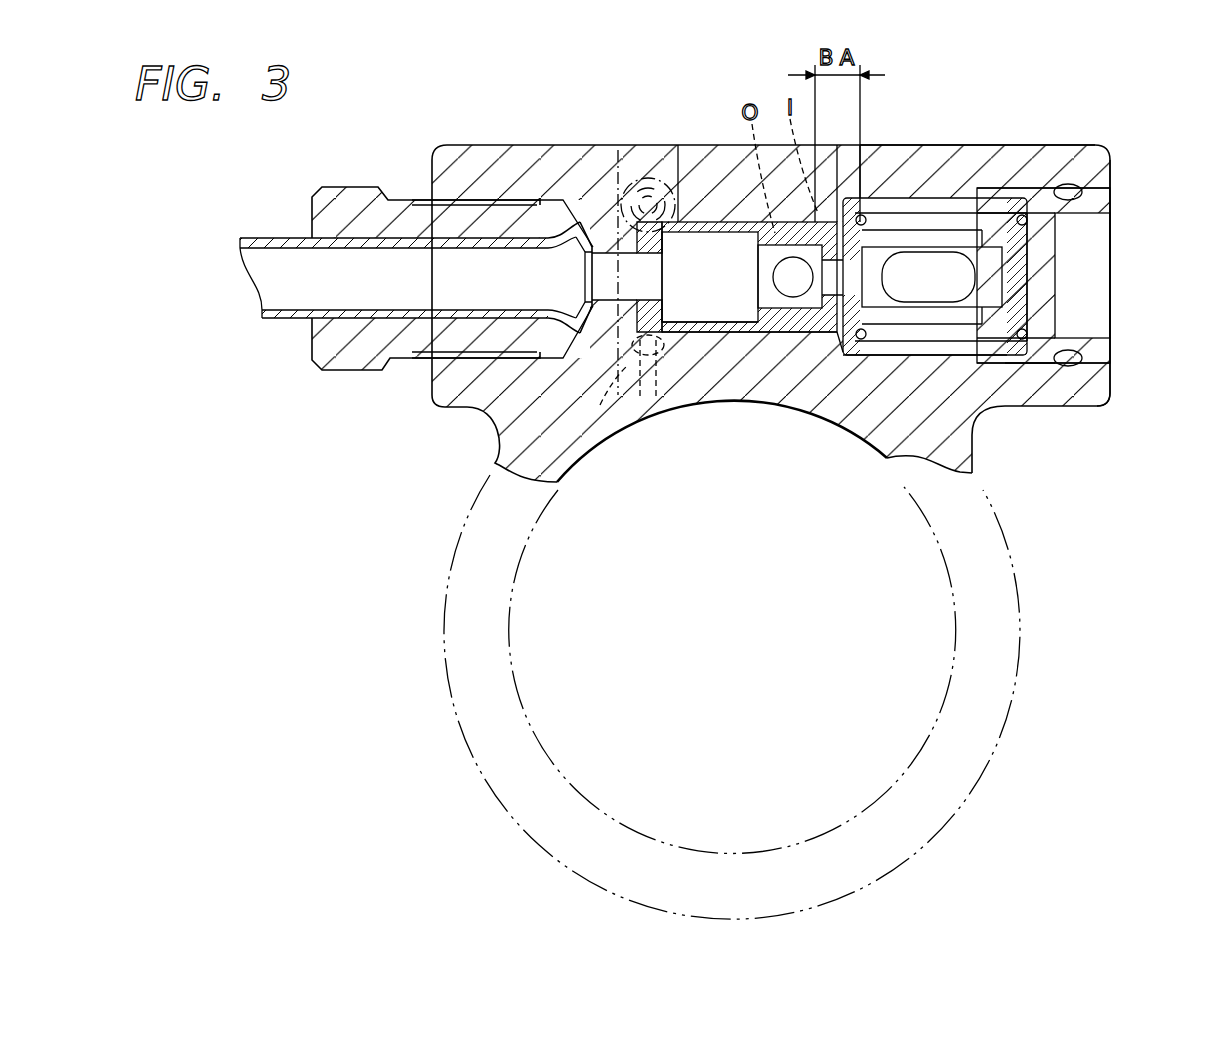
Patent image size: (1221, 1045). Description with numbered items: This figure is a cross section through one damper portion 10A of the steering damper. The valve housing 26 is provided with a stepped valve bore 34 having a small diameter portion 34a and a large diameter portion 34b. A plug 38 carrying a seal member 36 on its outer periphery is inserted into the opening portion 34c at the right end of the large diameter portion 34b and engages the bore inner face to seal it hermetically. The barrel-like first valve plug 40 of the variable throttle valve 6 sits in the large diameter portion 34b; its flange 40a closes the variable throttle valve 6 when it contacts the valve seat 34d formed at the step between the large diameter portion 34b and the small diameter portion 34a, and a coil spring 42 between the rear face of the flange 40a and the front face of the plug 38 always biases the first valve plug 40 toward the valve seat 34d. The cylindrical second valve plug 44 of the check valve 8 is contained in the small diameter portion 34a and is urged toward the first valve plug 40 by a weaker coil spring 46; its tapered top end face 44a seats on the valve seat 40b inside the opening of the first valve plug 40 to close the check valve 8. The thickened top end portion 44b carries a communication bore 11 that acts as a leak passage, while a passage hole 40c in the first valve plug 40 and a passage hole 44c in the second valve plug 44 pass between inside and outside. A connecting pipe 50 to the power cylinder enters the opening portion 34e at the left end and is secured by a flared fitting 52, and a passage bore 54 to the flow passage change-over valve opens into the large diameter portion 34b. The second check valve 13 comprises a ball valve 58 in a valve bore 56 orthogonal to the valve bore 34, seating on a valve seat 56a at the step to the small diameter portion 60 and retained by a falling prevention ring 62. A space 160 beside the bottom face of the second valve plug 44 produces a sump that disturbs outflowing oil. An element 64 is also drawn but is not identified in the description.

The variable throttle valve 6 is at (850, 356).
The check valve 8 is at (838, 338).
The damper portion 10A is at (845, 162).
The communication bore 11 is at (760, 266).
The second check valve 13 is at (622, 428).
The valve housing 26 is at (1008, 553).
The valve bore 34 is at (688, 220).
The small diameter portion 34a is at (716, 334).
The large diameter portion 34b is at (932, 200).
The opening portion 34c is at (1118, 200).
The valve seat 34d is at (872, 405).
The opening portion 34e is at (470, 355).
The seal member 36 is at (1056, 366).
The plug 38 is at (1093, 385).
The first valve plug 40 is at (1053, 250).
The flange 40a is at (878, 197).
The valve seat 40b is at (798, 230).
The passage hole 40c is at (960, 358).
The coil spring 42 is at (1040, 366).
The second valve plug 44 is at (730, 218).
The top end face 44a is at (1035, 278).
The top end portion 44b is at (880, 284).
The passage hole 44c is at (794, 340).
The coil spring 46 is at (705, 345).
The connecting pipe 50 is at (472, 192).
The flared fitting 52 is at (392, 186).
The passage bore 54 is at (846, 436).
The valve bore 56 is at (580, 282).
The valve seat 56a is at (624, 358).
The ball valve 58 is at (668, 402).
The small diameter portion 60 is at (652, 402).
The falling prevention ring 62 is at (632, 222).
The passage 64 is at (652, 180).
The space 160 is at (752, 285).